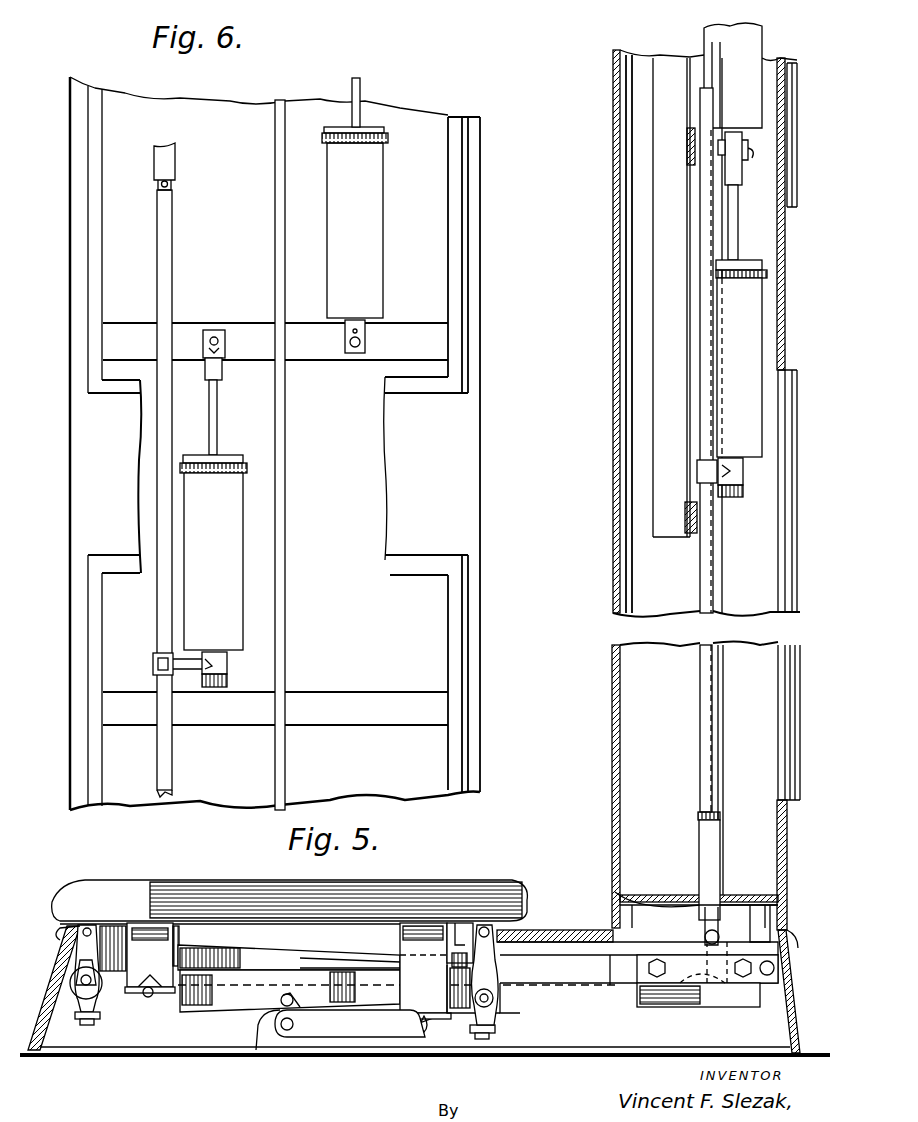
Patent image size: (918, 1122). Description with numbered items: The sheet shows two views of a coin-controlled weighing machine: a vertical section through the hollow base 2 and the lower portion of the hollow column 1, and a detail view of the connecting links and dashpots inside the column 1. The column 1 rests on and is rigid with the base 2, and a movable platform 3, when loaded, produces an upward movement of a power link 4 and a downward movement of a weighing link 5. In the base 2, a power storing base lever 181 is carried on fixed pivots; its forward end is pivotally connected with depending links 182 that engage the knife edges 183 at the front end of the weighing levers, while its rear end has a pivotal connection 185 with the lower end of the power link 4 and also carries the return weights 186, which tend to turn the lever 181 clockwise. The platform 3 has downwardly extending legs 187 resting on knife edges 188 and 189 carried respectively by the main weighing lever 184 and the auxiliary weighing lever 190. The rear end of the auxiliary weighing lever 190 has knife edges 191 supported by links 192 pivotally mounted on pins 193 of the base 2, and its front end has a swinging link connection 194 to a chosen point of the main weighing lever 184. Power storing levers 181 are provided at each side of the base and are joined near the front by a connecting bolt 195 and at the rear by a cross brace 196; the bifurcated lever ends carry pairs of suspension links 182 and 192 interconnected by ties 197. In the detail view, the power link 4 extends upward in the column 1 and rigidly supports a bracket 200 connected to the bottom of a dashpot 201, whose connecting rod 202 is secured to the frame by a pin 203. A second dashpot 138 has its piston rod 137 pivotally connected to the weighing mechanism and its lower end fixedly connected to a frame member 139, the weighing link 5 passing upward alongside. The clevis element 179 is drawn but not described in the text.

In FIG. 6, the hollow column 1 is at (458, 317).
In FIG. 5, the hollow column 1 is at (612, 712).
In FIG. 5, the base 2 is at (790, 963).
In FIG. 5, the movable platform 3 is at (87, 903).
In FIG. 6, the power link 4 is at (172, 152).
In FIG. 5, the power link 4 is at (705, 210).
In FIG. 6, the weighing link 5 is at (285, 617).
In FIG. 5, the weighing link 5 is at (724, 763).
In FIG. 6, the piston rod 137 is at (360, 95).
In FIG. 6, the dashpot 138 is at (378, 207).
In FIG. 5, the dashpot 138 is at (748, 50).
In FIG. 6, the frame member 139 is at (318, 353).
In FIG. 5, the frame member 139 is at (687, 145).
In FIG. 5, the clevis 179 is at (100, 1022).
In FIG. 5, the power storing base lever 181 is at (363, 963).
In FIG. 5, the depending links 182 is at (67, 957).
In FIG. 5, the knife edges 183 is at (80, 993).
In FIG. 5, the main weighing lever 184 is at (213, 1003).
In FIG. 5, the pivotal connection 185 is at (707, 930).
In FIG. 5, the return weights 186 is at (313, 960).
In FIG. 5, the downwardly extending legs 187 is at (465, 930).
In FIG. 5, the knife edge 188 is at (147, 998).
In FIG. 5, the knife edge 189 is at (422, 1030).
In FIG. 5, the auxiliary weighing lever 190 is at (352, 1023).
In FIG. 5, the knife edges 191 is at (510, 1013).
In FIG. 5, the links 192 is at (487, 960).
In FIG. 5, the pins 193 is at (488, 917).
In FIG. 5, the swinging link connection 194 is at (260, 1022).
In FIG. 5, the connecting bolt 195 is at (197, 960).
In FIG. 5, the cross brace 196 is at (757, 925).
In FIG. 5, the ties 197 is at (473, 1035).
In FIG. 6, the bracket 200 is at (180, 665).
In FIG. 5, the bracket 200 is at (700, 475).
In FIG. 6, the dashpot 201 is at (235, 566).
In FIG. 5, the dashpot 201 is at (728, 390).
In FIG. 6, the connecting rod 202 is at (217, 418).
In FIG. 5, the connecting rod 202 is at (733, 232).
In FIG. 6, the pin 203 is at (213, 335).
In FIG. 5, the pin 203 is at (728, 170).